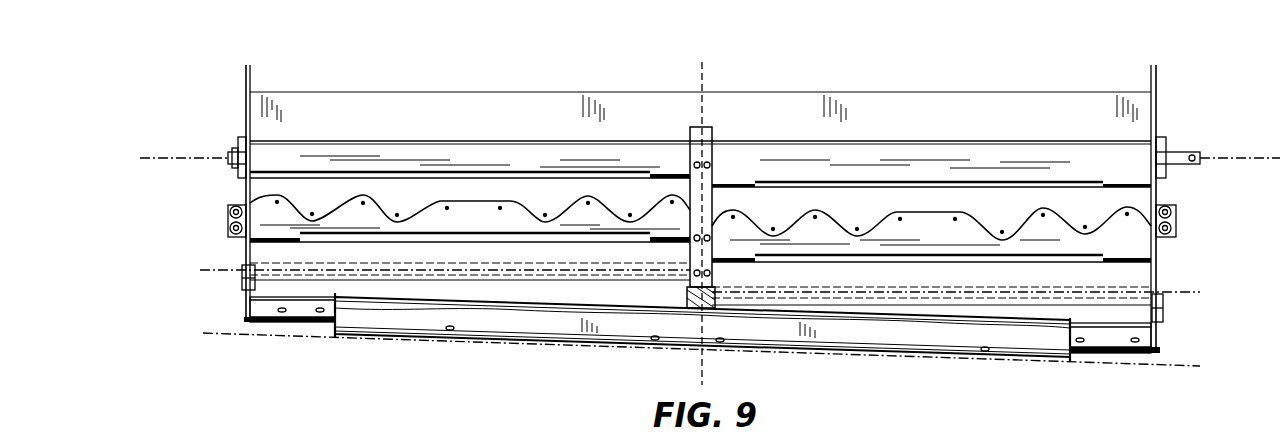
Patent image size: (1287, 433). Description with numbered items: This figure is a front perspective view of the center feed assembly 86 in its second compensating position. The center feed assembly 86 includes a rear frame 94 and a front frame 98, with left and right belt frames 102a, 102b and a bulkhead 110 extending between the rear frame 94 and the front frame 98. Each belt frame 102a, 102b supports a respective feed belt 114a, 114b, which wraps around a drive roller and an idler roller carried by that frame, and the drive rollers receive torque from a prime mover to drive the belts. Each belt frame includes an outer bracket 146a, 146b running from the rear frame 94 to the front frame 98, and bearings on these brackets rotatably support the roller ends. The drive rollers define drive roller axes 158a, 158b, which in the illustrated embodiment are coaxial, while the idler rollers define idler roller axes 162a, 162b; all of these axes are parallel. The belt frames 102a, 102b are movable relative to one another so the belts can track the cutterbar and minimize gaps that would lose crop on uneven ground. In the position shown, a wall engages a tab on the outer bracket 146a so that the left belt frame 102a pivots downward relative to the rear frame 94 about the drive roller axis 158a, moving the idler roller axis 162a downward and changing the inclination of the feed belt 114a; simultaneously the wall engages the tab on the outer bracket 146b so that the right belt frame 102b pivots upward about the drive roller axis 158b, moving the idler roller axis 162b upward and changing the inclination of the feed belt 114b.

The center feed assembly 86 is at (814, 76).
The rear frame 94 is at (562, 118).
The front frame 98 is at (555, 326).
The left belt frame 102a is at (995, 150).
The right belt frame 102b is at (410, 150).
The bulkhead 110 is at (705, 153).
The first feed belt 114a is at (880, 203).
The second feed belt 114b is at (492, 185).
The outer bracket 146a is at (1152, 252).
The outer bracket 146b is at (246, 247).
The first drive roller axis 158a is at (1226, 156).
The second drive roller axis 158b is at (190, 157).
The first idler roller axis 162a is at (1172, 291).
The second idler roller axis 162b is at (224, 265).